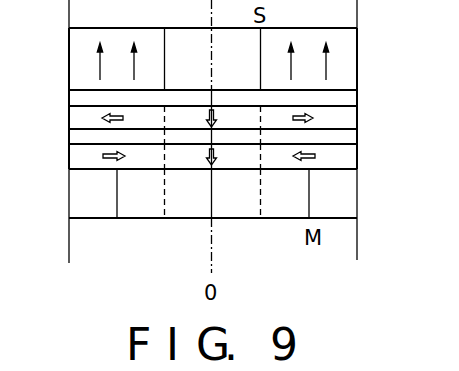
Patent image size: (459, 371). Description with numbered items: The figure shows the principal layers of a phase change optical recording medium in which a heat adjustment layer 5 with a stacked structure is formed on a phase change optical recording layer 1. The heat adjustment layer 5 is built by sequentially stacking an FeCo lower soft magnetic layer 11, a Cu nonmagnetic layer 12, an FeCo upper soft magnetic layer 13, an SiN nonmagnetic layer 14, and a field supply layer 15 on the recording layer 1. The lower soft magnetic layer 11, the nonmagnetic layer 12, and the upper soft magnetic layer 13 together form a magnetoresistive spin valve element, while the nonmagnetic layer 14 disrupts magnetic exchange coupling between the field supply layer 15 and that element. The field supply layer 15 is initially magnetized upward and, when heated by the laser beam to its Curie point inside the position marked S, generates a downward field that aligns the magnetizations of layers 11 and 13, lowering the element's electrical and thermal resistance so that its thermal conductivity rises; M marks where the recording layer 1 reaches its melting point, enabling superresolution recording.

The phase change optical recording layer 1 is at (359, 200).
The heat adjustment layer 5 is at (58, 28).
The lower soft magnetic layer 11 is at (359, 163).
The nonmagnetic layer 12 is at (359, 136).
The upper soft magnetic layer 13 is at (359, 118).
The nonmagnetic layer 14 is at (358, 98).
The field supply layer 15 is at (359, 58).